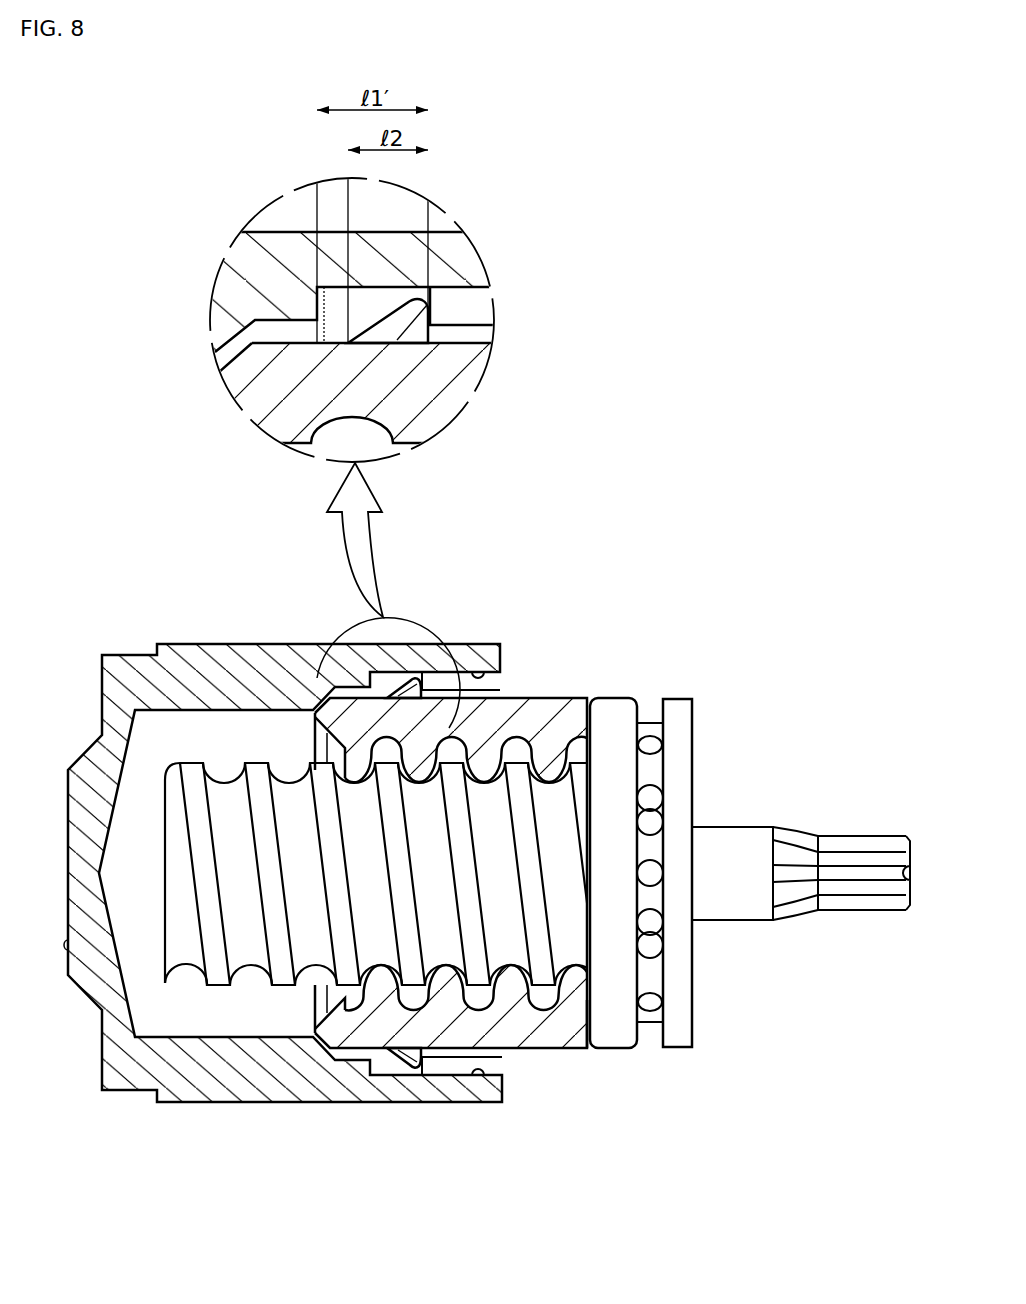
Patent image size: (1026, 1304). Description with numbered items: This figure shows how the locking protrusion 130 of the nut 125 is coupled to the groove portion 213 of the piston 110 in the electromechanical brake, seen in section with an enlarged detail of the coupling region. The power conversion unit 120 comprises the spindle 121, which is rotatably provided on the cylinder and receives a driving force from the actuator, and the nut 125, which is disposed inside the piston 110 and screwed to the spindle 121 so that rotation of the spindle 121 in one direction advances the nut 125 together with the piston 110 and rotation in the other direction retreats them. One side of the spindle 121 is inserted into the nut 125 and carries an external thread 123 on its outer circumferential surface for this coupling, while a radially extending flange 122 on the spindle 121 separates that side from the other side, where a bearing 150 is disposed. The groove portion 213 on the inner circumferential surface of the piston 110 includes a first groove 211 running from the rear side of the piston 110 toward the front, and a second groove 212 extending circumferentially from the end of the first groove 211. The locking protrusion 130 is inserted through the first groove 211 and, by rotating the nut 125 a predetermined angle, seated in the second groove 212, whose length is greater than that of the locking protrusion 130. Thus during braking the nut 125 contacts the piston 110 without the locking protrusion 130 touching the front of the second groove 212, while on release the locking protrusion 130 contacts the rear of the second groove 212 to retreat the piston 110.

The piston 110 is at (200, 650).
The power conversion unit 120 is at (460, 939).
The spindle 121 is at (494, 940).
The flange 122 is at (606, 1050).
The external thread 123 is at (208, 968).
The nut 125 is at (563, 1042).
The locking protrusion 130 is at (398, 688).
The bearing 150 is at (680, 1050).
The first groove 211 is at (482, 678).
The second groove 212 is at (387, 1068).
The groove portion 213 is at (430, 898).